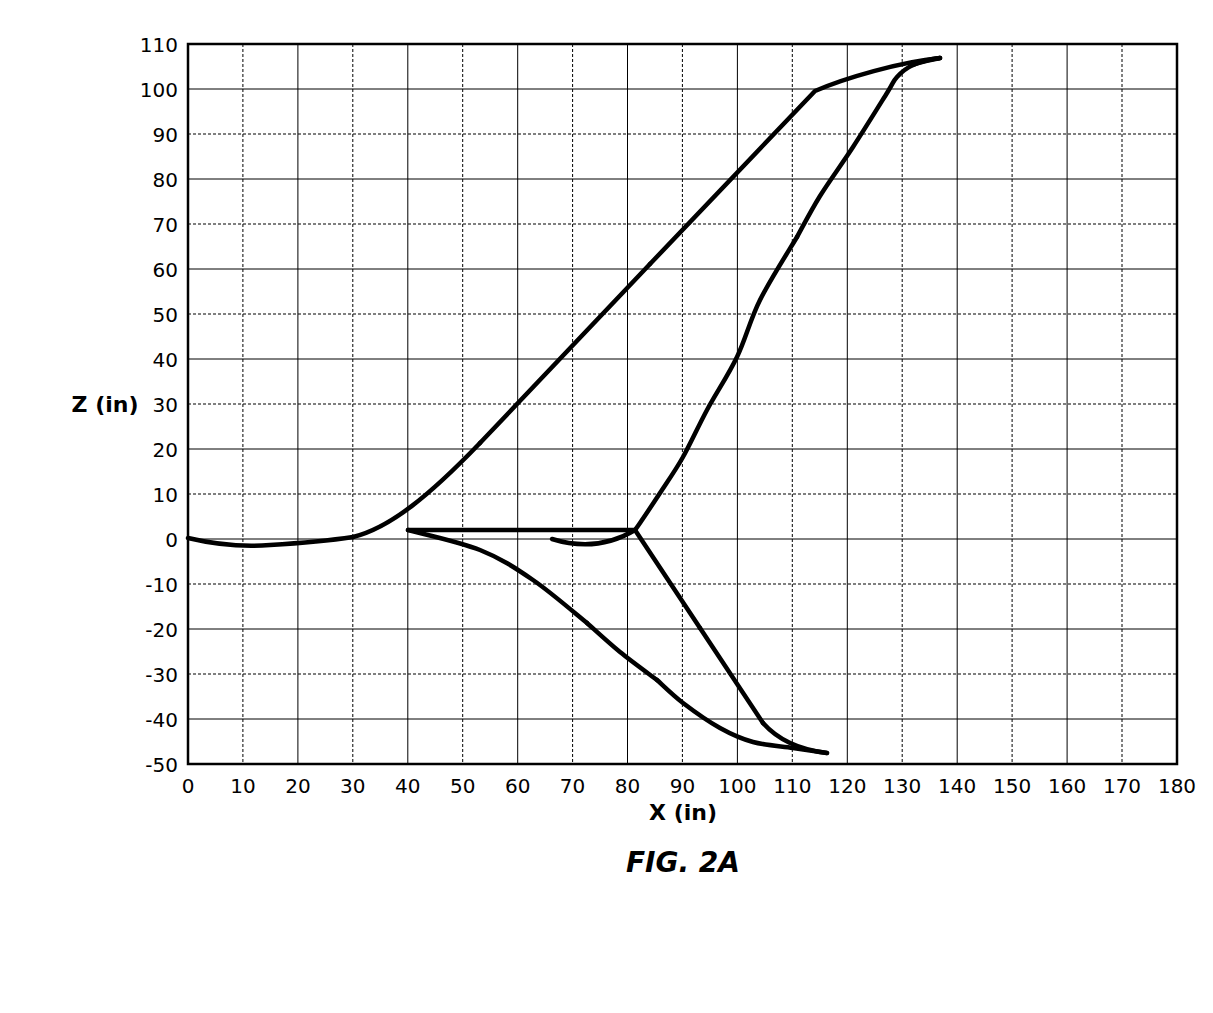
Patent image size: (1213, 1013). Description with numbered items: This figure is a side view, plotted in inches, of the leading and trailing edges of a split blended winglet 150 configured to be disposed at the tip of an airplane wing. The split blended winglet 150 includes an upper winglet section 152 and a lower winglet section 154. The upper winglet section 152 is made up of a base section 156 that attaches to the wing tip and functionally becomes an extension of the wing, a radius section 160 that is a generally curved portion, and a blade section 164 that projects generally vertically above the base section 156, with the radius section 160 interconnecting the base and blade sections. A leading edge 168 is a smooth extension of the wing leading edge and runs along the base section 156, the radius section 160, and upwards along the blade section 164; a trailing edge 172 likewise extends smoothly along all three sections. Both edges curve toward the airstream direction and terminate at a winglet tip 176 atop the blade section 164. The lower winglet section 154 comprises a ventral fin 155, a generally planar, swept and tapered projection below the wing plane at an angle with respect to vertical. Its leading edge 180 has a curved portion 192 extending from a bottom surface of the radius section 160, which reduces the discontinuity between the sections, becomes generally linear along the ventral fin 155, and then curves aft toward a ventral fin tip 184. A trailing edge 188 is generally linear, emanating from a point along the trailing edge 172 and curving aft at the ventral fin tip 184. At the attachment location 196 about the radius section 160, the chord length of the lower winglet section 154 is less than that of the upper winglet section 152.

The split blended winglet 150 is at (513, 178).
The upper winglet section 152 is at (775, 302).
The lower winglet section 154 is at (718, 628).
The ventral fin 155 is at (650, 617).
The base section 156 is at (268, 536).
The radius section 160 is at (495, 478).
The blade section 164 is at (607, 352).
The leading edge 168 is at (710, 202).
The trailing edge 172 is at (797, 237).
The winglet tip 176 is at (940, 60).
The leading edge 180 is at (587, 627).
The ventral fin tip 184 is at (827, 752).
The trailing edge 188 is at (672, 582).
The curved portion 192 is at (478, 550).
The attachment location 196 is at (553, 537).